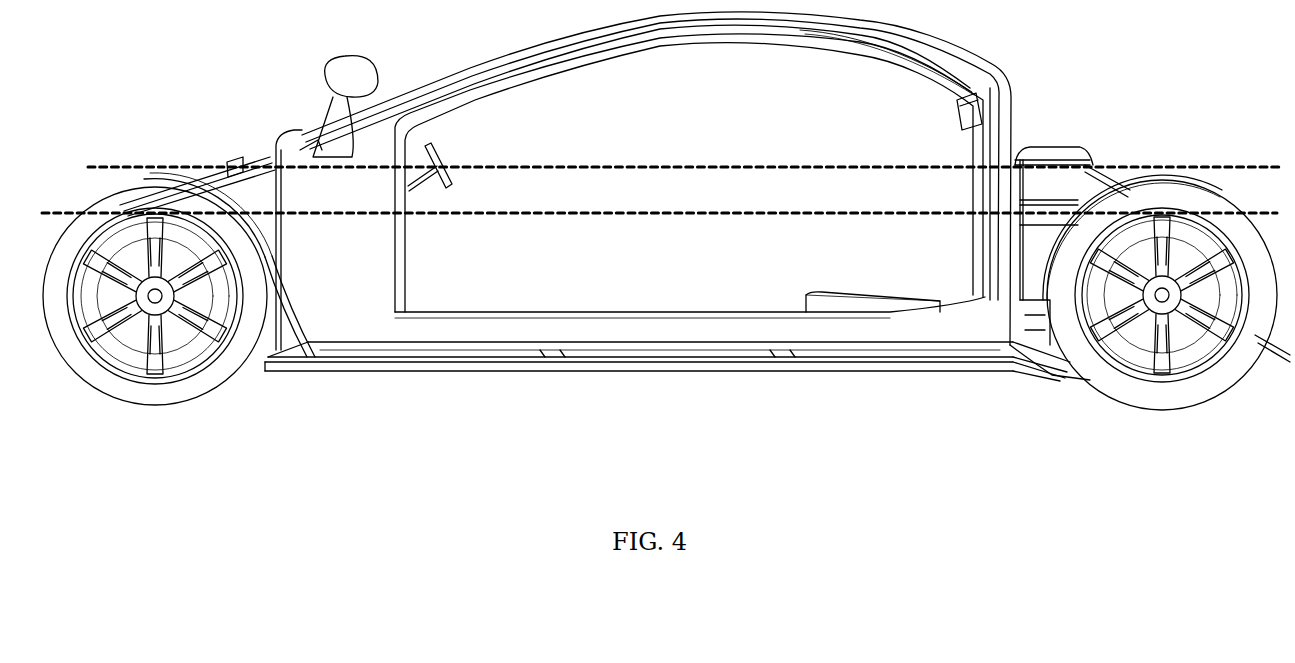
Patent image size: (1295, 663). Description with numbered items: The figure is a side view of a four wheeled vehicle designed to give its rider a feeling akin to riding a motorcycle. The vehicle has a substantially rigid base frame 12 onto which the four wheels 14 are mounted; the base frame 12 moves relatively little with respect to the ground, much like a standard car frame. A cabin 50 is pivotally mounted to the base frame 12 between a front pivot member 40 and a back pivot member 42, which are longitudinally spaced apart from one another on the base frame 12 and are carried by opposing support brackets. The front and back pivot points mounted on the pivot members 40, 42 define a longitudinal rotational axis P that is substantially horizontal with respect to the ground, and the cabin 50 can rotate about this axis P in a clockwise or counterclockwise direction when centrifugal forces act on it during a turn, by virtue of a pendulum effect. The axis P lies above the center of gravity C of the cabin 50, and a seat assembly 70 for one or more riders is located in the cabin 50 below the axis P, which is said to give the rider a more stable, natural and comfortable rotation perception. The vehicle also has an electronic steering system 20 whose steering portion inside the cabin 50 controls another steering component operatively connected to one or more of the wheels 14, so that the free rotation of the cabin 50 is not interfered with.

The base frame 12 is at (548, 370).
The wheels 14 is at (1210, 195).
The electronic steering system 20 is at (410, 189).
The front pivot member 40 is at (263, 163).
The back pivot member 42 is at (1028, 162).
The cabin 50 is at (465, 68).
The seat assembly 70 is at (823, 300).
The longitudinal rotational axis P is at (707, 163).
The center of gravity C is at (735, 213).